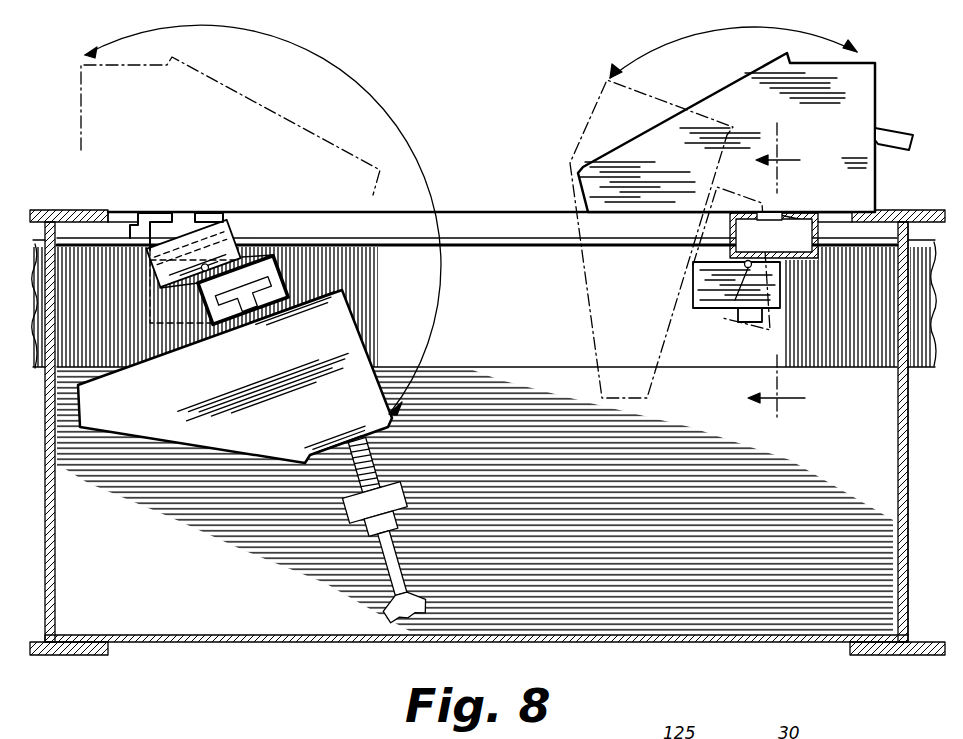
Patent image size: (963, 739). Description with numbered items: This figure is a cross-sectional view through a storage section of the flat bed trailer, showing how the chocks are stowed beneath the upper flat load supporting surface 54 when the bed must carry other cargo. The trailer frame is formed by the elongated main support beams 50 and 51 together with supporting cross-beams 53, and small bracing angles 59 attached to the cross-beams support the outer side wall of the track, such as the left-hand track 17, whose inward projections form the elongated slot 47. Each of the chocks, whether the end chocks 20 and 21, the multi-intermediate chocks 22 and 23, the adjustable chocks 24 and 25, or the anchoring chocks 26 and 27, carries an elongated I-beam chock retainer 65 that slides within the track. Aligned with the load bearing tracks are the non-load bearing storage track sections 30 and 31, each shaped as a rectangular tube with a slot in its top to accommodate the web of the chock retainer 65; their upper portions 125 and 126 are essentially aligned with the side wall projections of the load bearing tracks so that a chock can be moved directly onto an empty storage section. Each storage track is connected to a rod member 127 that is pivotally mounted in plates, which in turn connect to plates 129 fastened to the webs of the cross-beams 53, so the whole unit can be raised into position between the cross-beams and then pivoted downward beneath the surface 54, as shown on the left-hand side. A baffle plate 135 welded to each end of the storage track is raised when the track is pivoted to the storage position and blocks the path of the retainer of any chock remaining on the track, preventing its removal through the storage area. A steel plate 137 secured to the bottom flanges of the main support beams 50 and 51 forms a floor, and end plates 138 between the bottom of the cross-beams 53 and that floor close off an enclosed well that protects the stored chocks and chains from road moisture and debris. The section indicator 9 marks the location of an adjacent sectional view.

The section line 9- 9 is at (778, 281).
The left-hand track 17 is at (170, 197).
The end chock 20 is at (695, 212).
The end chock 21 is at (280, 325).
The multi-intermediate chock 22 is at (695, 212).
The multi-intermediate chock 23 is at (280, 325).
The adjustable chock 24 is at (695, 212).
The adjustable chock 25 is at (280, 325).
The anchoring chock 26 is at (630, 135).
The anchoring chock 27 is at (265, 98).
The storage track section 30 is at (820, 210).
The storage track section 31 is at (277, 247).
The elongated slot 47 is at (184, 212).
The main support beam 50 is at (57, 602).
The main support beam 51 is at (908, 473).
The cross-beam 53 is at (484, 303).
The upper flat load supporting surface 54 is at (495, 212).
The bracing angle 59 is at (130, 215).
The I-beam chock retainer 65 is at (246, 314).
The upper portion of storage track 125 is at (230, 332).
The upper portion of storage track 126 is at (284, 305).
The rod member 127 is at (215, 268).
The plate 129 is at (752, 323).
The baffle plate 135 is at (206, 264).
The steel plate 137 is at (298, 637).
The end plate 138 is at (553, 600).